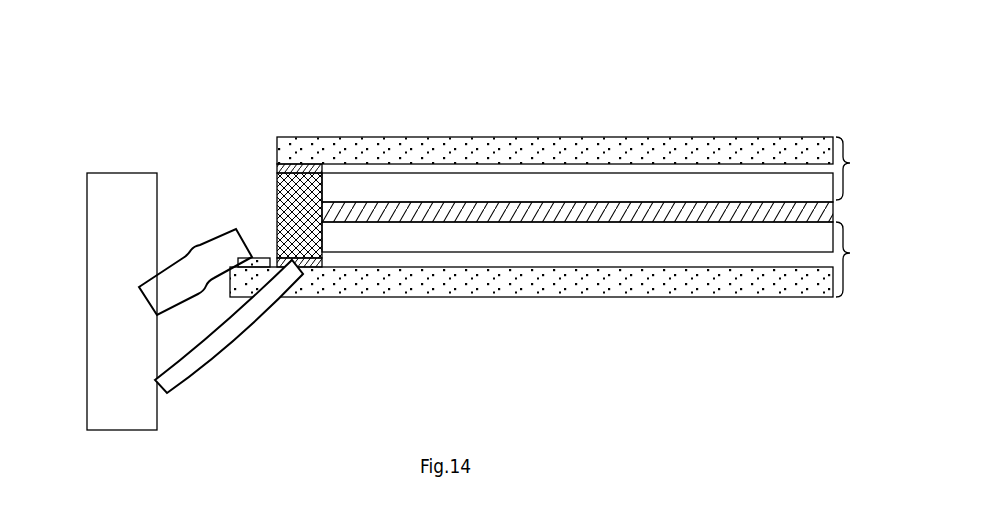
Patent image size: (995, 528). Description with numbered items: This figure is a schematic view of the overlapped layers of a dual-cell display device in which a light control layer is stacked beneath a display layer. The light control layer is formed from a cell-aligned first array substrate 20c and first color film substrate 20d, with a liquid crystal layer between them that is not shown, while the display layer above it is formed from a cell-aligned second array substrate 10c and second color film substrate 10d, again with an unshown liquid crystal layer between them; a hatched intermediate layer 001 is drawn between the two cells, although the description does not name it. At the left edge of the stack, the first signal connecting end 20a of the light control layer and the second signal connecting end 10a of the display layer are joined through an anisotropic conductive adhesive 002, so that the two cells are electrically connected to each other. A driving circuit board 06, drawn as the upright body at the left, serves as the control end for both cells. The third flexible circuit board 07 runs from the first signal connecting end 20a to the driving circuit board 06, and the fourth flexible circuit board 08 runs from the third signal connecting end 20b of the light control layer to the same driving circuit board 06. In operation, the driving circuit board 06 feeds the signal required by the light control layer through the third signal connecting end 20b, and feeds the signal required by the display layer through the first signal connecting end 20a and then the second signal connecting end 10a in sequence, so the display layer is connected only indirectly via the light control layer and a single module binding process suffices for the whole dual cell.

The driving circuit board 06 is at (103, 280).
The third flexible circuit board 07 is at (203, 350).
The fourth flexible circuit board 08 is at (210, 255).
The intermediate adhesive layer 001 is at (408, 212).
The anisotropic conductive adhesive 002 is at (293, 211).
The second signal connecting end 10a is at (307, 170).
The second array substrate 10c is at (658, 190).
The second color film substrate 10d is at (570, 148).
The first signal connecting end 20a is at (305, 265).
The third signal connecting end 20b is at (258, 260).
The first array substrate 20c is at (653, 278).
The first color film substrate 20d is at (550, 233).